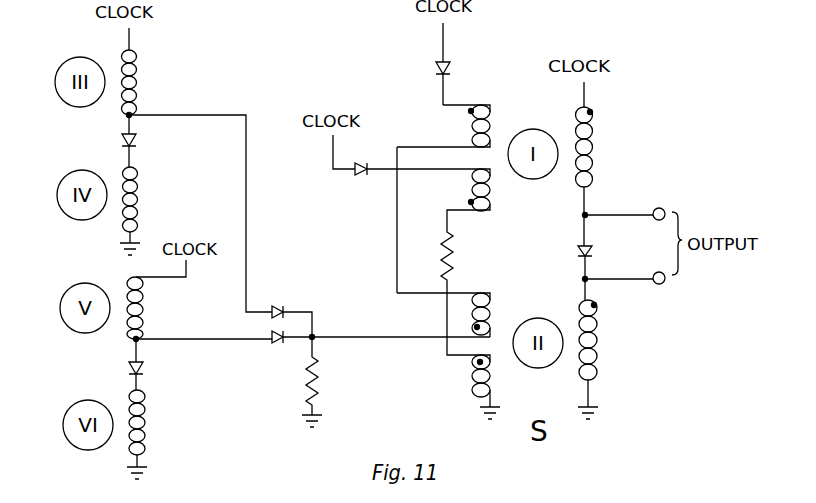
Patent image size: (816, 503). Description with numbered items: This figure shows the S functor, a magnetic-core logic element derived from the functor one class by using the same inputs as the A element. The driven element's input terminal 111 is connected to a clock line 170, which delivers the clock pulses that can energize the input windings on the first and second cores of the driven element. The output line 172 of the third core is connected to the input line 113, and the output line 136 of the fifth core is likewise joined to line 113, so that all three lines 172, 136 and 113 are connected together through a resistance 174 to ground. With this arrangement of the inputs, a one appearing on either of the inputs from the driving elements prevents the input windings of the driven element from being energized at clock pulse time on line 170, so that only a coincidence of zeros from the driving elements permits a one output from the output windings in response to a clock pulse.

The output line 172 is at (191, 114).
The output line 136 is at (213, 337).
The input terminal 113 is at (384, 336).
The resistance 174 is at (332, 370).
The clock line 170 is at (447, 50).
The input terminal 111 is at (466, 104).